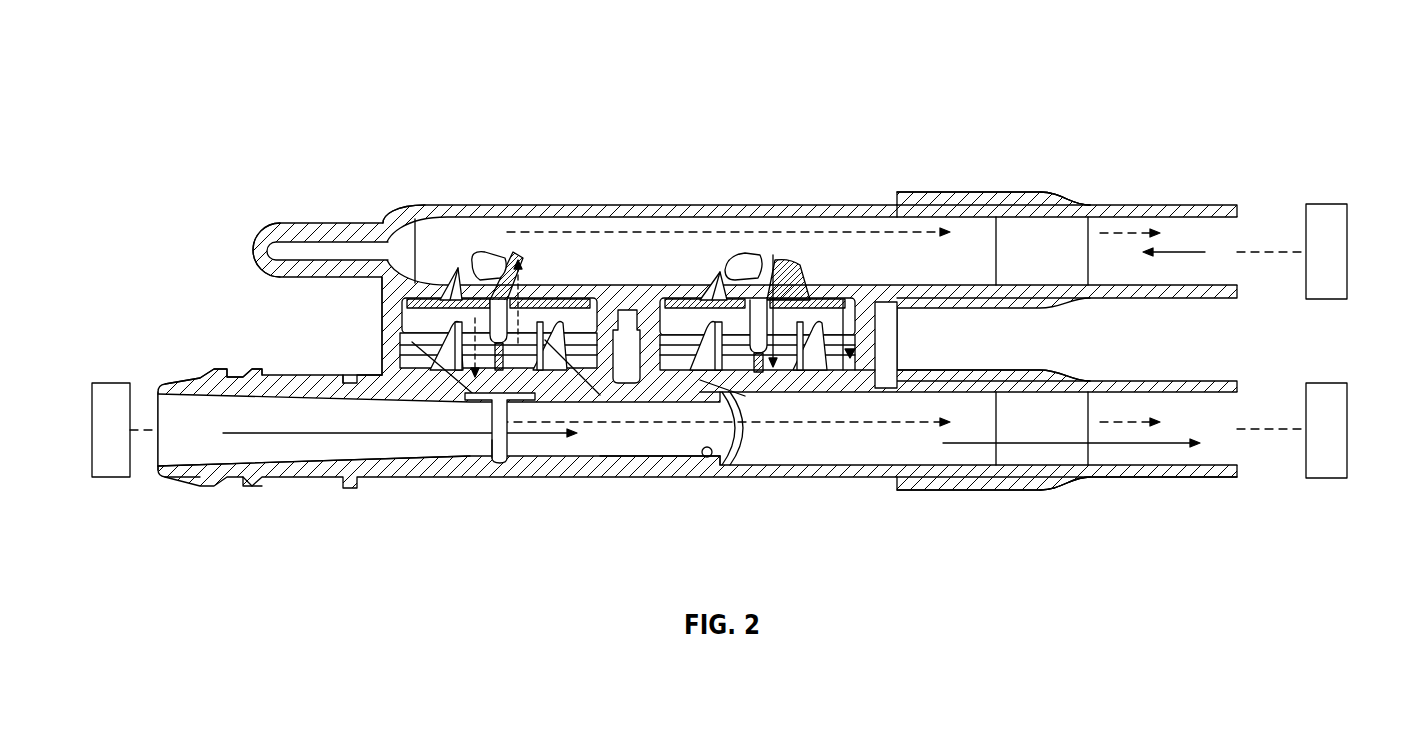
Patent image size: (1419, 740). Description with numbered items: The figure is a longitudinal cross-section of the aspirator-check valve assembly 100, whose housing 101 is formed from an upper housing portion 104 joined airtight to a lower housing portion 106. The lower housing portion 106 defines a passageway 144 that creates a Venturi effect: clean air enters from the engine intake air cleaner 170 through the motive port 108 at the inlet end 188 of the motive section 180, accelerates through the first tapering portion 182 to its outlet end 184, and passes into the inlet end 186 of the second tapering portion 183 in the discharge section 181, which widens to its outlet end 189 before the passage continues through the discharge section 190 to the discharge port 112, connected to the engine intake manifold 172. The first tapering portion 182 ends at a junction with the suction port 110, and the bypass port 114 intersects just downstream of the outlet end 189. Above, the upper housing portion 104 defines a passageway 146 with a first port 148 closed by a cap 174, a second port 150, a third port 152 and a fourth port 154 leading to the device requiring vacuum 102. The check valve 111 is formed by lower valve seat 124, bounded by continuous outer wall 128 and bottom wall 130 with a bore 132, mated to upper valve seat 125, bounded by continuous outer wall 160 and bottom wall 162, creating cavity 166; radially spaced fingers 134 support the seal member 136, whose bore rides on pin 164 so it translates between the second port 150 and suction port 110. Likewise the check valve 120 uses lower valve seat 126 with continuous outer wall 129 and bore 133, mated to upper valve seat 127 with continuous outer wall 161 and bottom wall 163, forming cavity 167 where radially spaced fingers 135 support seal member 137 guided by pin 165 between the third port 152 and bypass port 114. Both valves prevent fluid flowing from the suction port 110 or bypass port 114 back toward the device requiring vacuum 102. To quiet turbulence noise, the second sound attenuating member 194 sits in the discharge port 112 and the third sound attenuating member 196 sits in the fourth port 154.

The aspirator-check valve assembly 100 is at (322, 88).
The housing 101 is at (393, 212).
The device requiring vacuum 102 is at (1325, 205).
The upper housing portion 104 is at (715, 213).
The lower housing portion 106 is at (390, 448).
The motive port 108 is at (157, 388).
The suction port 110 is at (425, 406).
The check valve 111 is at (547, 268).
The discharge port 112 is at (1035, 481).
The bypass port 114 is at (722, 392).
The check valve 120 is at (807, 267).
The lower valve seat 124 is at (381, 358).
The upper valve seat 125 is at (655, 296).
The lower valve seat 126 is at (906, 384).
The upper valve seat 127 is at (866, 290).
The continuous outer wall 128 is at (545, 377).
The continuous outer wall 129 is at (800, 375).
The bottom wall 130 is at (478, 398).
The bore 132 is at (552, 395).
The bore 133 is at (755, 392).
The radially spaced fingers 134 is at (405, 338).
The radially spaced fingers 135 is at (812, 322).
The seal member 136 is at (416, 215).
The seal member 137 is at (716, 285).
The passageway 144 is at (397, 456).
The passageway 146 is at (720, 221).
The first port 148 is at (272, 250).
The second port 150 is at (490, 262).
The third port 152 is at (748, 258).
The fourth port 154 is at (1000, 202).
The continuous outer wall 160 is at (399, 314).
The continuous outer wall 161 is at (852, 322).
The bottom wall 162 is at (496, 252).
The bottom wall 163 is at (770, 290).
The pin 164 is at (452, 290).
The pin 165 is at (752, 387).
The cavity 166 is at (573, 326).
The cavity 167 is at (870, 372).
The engine intake air cleaner 170 is at (120, 480).
The engine intake manifold 172 is at (1325, 479).
The cap 174 is at (301, 222).
The motive section 180 is at (247, 389).
The discharge section 181 is at (673, 466).
The first tapering portion 182 is at (253, 458).
The second tapering portion 183 is at (706, 458).
The outlet end 184 is at (497, 470).
The inlet end 186 is at (512, 447).
The inlet end 188 is at (192, 452).
The outlet end 189 is at (724, 458).
The discharge section 190 is at (878, 479).
The second sound attenuating member 194 is at (1070, 455).
The third sound attenuating member 196 is at (1075, 222).